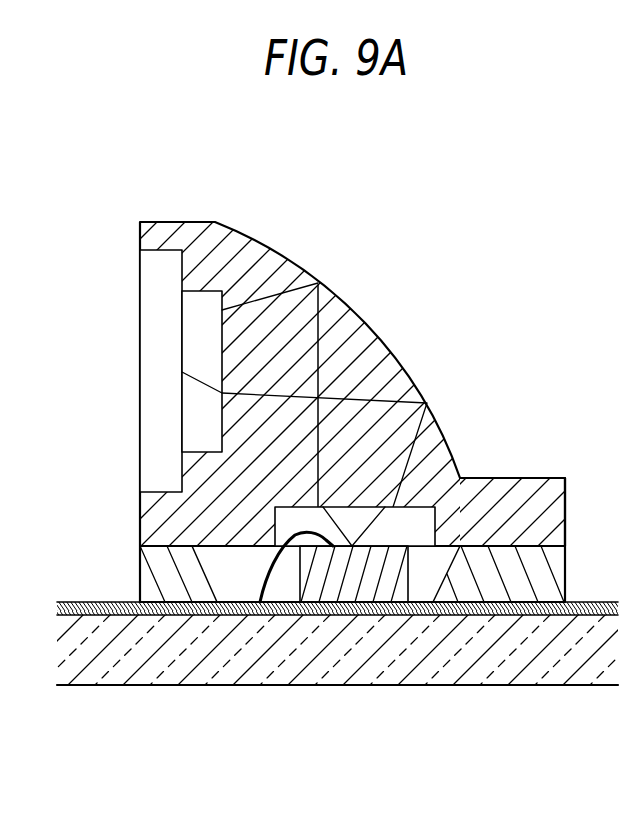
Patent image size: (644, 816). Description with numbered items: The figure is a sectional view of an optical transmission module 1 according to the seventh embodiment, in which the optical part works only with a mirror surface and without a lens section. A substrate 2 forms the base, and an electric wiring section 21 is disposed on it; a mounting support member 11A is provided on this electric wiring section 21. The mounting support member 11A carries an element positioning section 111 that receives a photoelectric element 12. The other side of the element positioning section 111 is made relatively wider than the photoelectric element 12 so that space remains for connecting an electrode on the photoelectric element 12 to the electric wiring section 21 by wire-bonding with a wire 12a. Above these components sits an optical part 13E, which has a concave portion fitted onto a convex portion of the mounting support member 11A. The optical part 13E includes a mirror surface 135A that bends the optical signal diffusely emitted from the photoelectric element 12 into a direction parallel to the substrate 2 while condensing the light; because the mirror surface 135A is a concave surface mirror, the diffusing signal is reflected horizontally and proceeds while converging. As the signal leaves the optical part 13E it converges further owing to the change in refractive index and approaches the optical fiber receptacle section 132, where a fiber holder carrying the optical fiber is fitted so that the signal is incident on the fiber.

The optical transmission module 1 is at (437, 257).
The substrate 2 is at (107, 640).
The electric wiring section 21 is at (187, 615).
The mounting support member 11A is at (488, 571).
The element positioning section 111 is at (420, 583).
The photoelectric element 12 is at (355, 575).
The wire 12a is at (262, 578).
The optical fiber receptacle section 132 is at (153, 323).
The mirror surface 135A is at (407, 368).
The optical part 13E is at (252, 262).